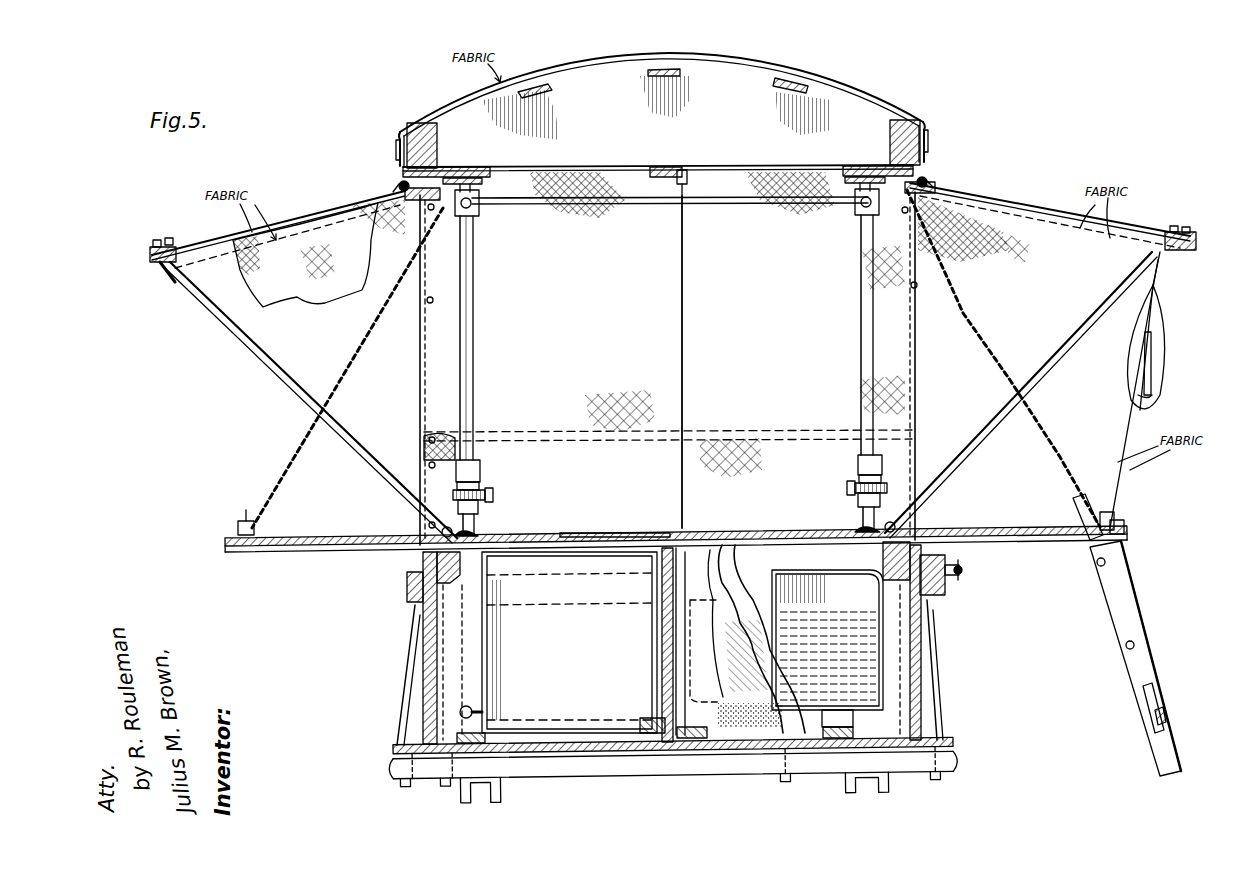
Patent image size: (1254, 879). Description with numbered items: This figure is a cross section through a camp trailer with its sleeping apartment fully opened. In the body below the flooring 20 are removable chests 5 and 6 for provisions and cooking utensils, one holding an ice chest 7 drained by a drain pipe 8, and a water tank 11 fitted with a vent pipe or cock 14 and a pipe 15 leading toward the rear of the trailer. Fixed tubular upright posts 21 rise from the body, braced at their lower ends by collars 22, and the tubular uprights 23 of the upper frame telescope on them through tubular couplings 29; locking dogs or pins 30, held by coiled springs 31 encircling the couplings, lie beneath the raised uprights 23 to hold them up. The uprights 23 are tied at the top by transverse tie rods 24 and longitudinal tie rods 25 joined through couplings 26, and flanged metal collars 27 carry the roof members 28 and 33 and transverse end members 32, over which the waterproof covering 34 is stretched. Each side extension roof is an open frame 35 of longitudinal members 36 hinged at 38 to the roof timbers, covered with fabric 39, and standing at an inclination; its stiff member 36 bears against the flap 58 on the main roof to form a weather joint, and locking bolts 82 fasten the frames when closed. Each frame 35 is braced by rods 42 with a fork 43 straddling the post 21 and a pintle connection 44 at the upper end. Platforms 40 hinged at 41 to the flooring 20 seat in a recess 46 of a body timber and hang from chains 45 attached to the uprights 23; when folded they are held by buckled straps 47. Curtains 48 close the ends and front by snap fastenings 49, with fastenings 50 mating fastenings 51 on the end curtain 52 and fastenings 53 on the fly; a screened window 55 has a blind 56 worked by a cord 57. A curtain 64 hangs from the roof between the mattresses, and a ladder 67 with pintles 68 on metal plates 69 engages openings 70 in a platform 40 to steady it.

The chest 5 is at (569, 642).
The chest 6 is at (734, 652).
The ice chest 7 is at (730, 548).
The drain pipe 8 is at (770, 775).
The tank 11 is at (800, 562).
The vent pipe or cock 14 is at (962, 570).
The pipe 15 is at (460, 712).
The flooring 20 is at (630, 528).
The upright posts 21 is at (478, 520).
The collars 22 is at (478, 730).
The uprights 23 is at (476, 321).
The transverse tie rods 24 is at (555, 204).
The longitudinal tie rods 25 is at (475, 214).
The couplings 26 is at (455, 222).
The flanged metal collars 27 is at (480, 192).
The longitudinal members 28 is at (480, 178).
The tubular couplings 29 is at (478, 468).
The locking dogs or pins 30 is at (493, 496).
The coiled springs 31 is at (487, 488).
The transverse end members 32 is at (600, 84).
The longitudinal members 33 is at (438, 133).
The covering 34 is at (762, 68).
The open frame 35 is at (1030, 215).
The longitudinal members 36 is at (405, 202).
The hinge 38 is at (667, 221).
The fabric 39 is at (295, 222).
The leaves or platforms 40 is at (325, 540).
The hinges 41 is at (442, 532).
The rods 42 is at (262, 360).
The fork 43 is at (480, 534).
The pintle or detachable connection 44 is at (168, 270).
The chains 45 is at (300, 448).
The recess 46 is at (465, 565).
The buckled straps 47 is at (240, 520).
The curtains 48 is at (295, 300).
The snap fastenings 49 is at (1128, 530).
The snap fastenings 50 is at (917, 290).
The mate fastenings 51 is at (425, 302).
The end curtain 52 is at (745, 361).
The fastenings 53 is at (425, 458).
The screened openings or windows 55 is at (1150, 380).
The drop curtain or blind 56 is at (1152, 360).
The cord 57 is at (1166, 300).
The strip or flap 58 is at (400, 183).
The curtain 64 is at (684, 322).
The ladder 67 is at (1148, 672).
The pintles 68 is at (1082, 500).
The metal plates 69 is at (1108, 578).
The openings 70 is at (260, 552).
The locking bolts 82 is at (160, 240).